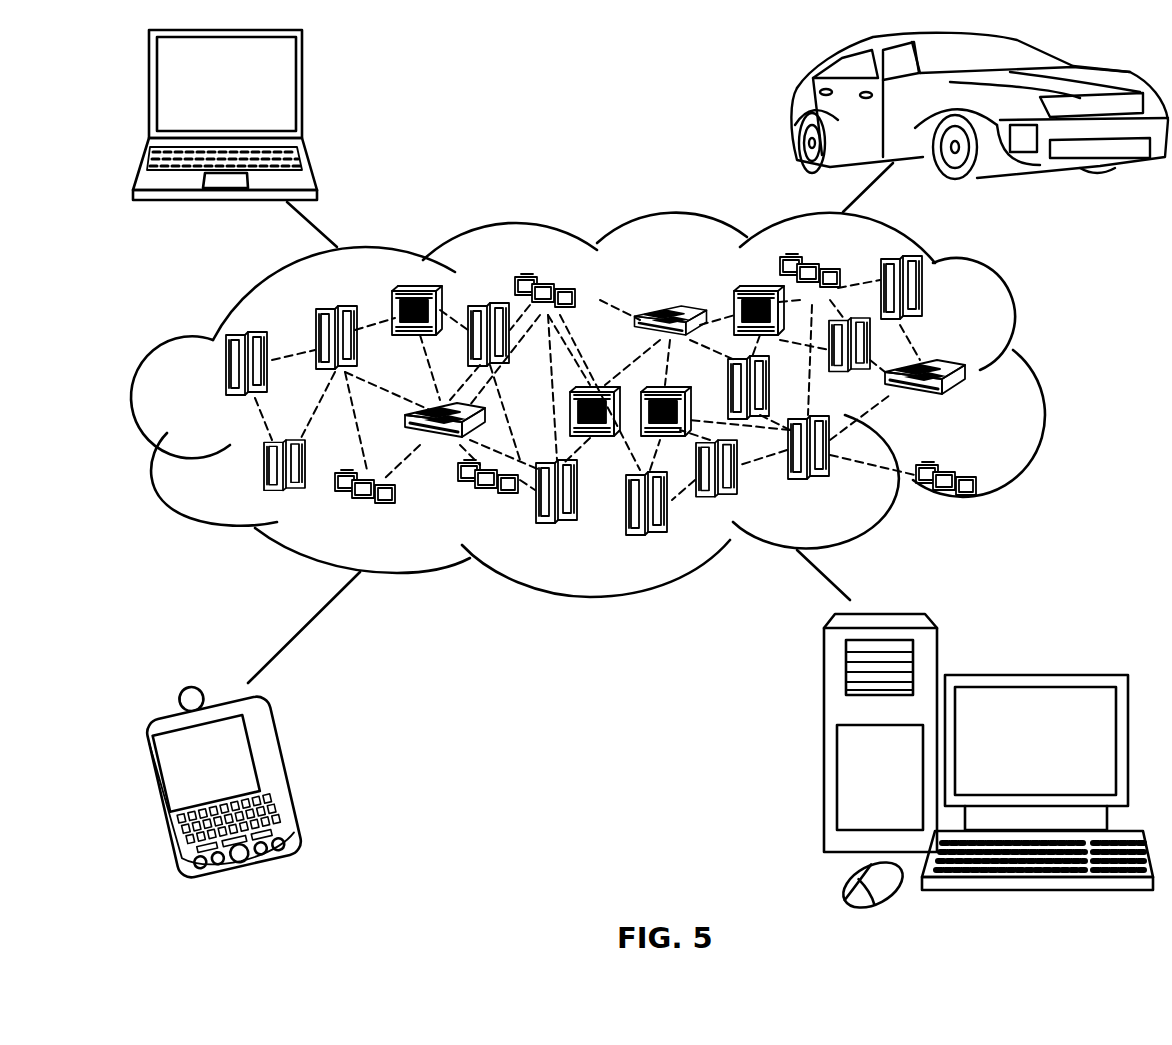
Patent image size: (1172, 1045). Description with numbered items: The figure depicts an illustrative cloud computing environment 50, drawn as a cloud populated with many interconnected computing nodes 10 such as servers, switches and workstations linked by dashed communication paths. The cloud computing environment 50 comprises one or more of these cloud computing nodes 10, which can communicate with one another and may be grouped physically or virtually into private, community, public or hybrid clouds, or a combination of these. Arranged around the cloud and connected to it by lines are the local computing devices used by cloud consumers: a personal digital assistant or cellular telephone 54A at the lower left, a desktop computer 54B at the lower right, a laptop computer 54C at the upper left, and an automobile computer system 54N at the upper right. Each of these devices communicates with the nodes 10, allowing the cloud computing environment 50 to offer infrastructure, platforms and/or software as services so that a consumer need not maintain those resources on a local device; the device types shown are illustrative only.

The cloud computing node 10 is at (1063, 368).
The cloud computing environment 50 is at (617, 405).
The personal digital assistant or cellular telephone 54A is at (291, 772).
The desktop computer 54B is at (1035, 675).
The laptop computer 54C is at (303, 93).
The automobile computer system 54N is at (790, 113).